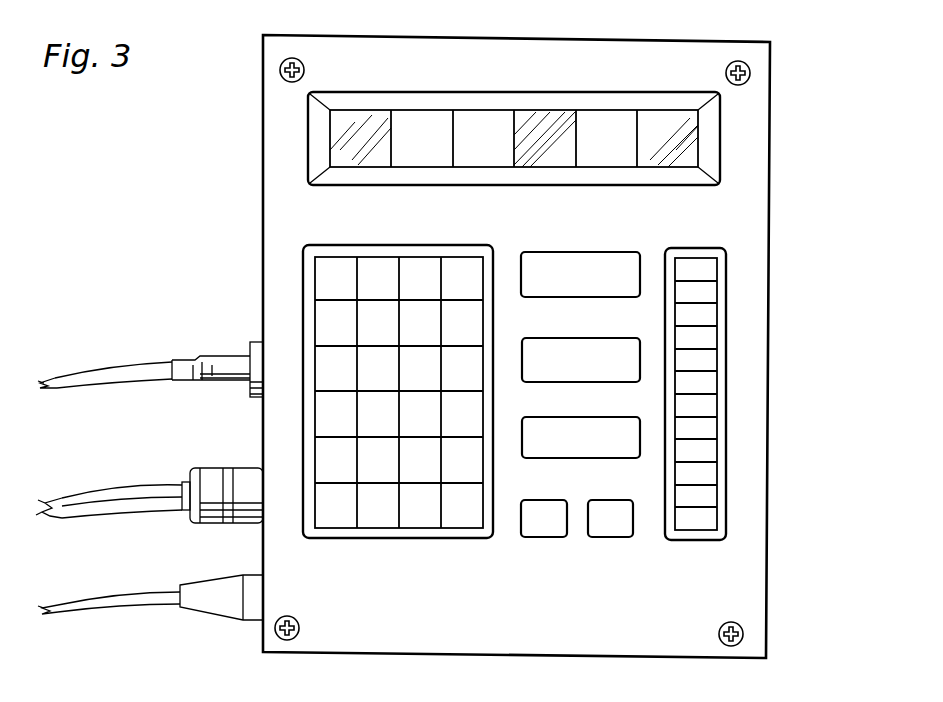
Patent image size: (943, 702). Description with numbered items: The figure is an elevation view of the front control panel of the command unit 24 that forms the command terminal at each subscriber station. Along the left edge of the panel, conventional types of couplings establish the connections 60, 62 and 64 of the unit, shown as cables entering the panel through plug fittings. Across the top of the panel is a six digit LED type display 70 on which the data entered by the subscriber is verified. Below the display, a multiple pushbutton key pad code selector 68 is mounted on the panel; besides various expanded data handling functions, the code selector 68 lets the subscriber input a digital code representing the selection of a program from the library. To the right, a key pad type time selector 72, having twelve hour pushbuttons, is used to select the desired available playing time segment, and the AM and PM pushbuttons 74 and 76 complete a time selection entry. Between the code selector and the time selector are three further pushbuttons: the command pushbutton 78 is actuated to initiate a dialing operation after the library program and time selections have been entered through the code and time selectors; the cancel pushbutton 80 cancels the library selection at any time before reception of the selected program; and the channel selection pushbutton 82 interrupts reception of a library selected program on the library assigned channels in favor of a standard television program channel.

The command unit 24 is at (790, 108).
The display 70 is at (290, 143).
The code selector 68 is at (300, 313).
The command pushbutton 78 is at (590, 253).
The channel selection pushbutton 82 is at (583, 343).
The cancel pushbutton 80 is at (583, 420).
The AM pushbutton 74 is at (540, 530).
The PM pushbutton 76 is at (610, 530).
The time selector 72 is at (730, 331).
The connection 62 is at (212, 372).
The connection 64 is at (205, 515).
The connection 60 is at (210, 600).